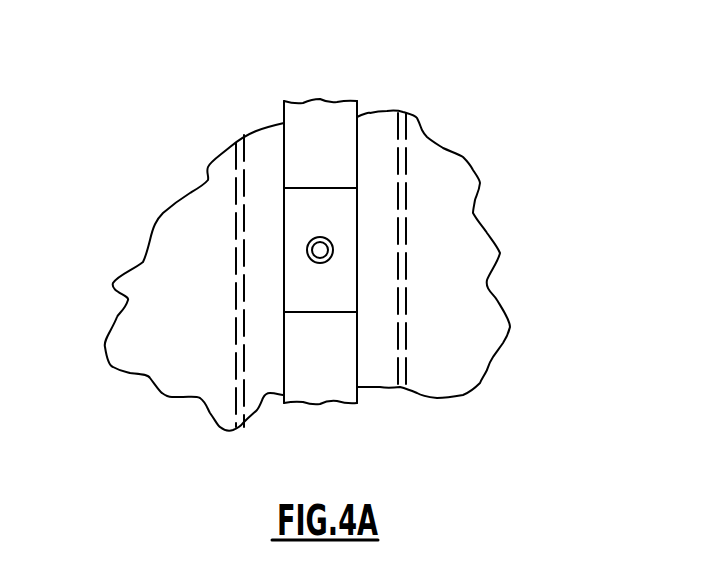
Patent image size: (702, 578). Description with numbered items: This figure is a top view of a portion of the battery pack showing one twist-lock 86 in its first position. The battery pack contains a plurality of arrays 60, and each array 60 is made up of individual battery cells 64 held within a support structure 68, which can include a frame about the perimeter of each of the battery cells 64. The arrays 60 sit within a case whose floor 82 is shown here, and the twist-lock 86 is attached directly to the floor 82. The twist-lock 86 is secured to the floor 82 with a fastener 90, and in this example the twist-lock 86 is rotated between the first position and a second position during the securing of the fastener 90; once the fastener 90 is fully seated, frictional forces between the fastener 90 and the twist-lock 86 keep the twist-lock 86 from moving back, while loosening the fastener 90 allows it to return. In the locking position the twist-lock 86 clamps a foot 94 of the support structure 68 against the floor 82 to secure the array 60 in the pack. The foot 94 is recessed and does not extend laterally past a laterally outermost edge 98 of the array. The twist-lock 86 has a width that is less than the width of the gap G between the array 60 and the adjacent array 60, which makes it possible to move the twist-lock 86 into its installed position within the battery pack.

The array 60 is at (177, 378).
The battery cell 64 is at (197, 217).
The support structure 68 is at (225, 395).
The floor 82 is at (379, 265).
The twist-lock 86 is at (340, 211).
The fastener 90 is at (328, 249).
The foot 94 is at (262, 397).
The laterally outermost edge 98 is at (289, 145).
The gap G is at (328, 146).